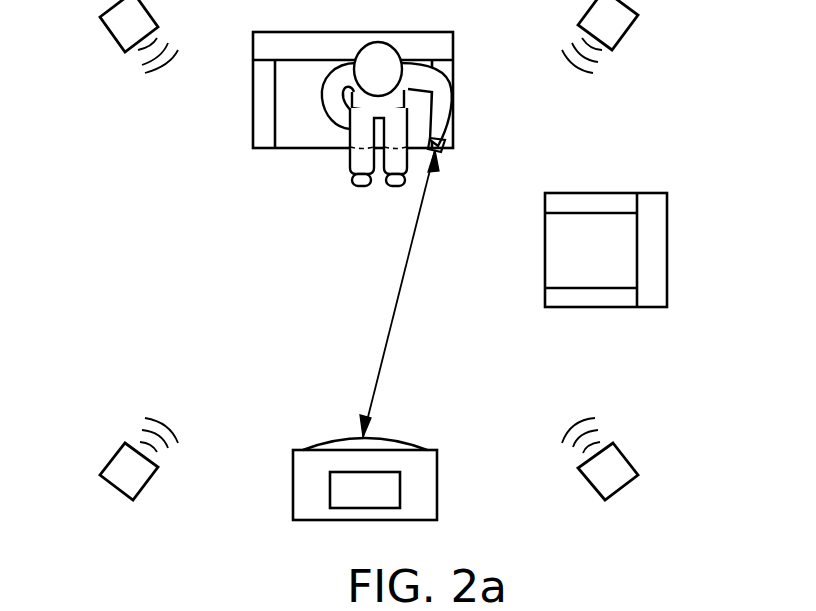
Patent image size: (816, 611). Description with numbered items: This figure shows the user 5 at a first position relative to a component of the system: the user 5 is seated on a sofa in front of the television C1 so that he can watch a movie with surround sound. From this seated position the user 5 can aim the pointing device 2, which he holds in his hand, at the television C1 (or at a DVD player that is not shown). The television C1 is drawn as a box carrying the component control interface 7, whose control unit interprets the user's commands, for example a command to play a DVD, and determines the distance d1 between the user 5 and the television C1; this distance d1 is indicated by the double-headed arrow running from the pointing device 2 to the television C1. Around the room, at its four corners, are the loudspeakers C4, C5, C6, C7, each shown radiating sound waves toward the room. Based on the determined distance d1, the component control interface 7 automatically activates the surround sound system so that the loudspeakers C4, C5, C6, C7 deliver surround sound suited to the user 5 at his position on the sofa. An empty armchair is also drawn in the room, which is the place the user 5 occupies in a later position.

The user 5 is at (445, 97).
The pointing device 2 is at (441, 148).
The component control interface 7 is at (390, 493).
The television C1 is at (306, 488).
The loudspeaker C4 is at (620, 470).
The loudspeaker C5 is at (120, 480).
The loudspeaker C6 is at (124, 28).
The loudspeaker C7 is at (612, 33).
The distance d1 is at (393, 315).